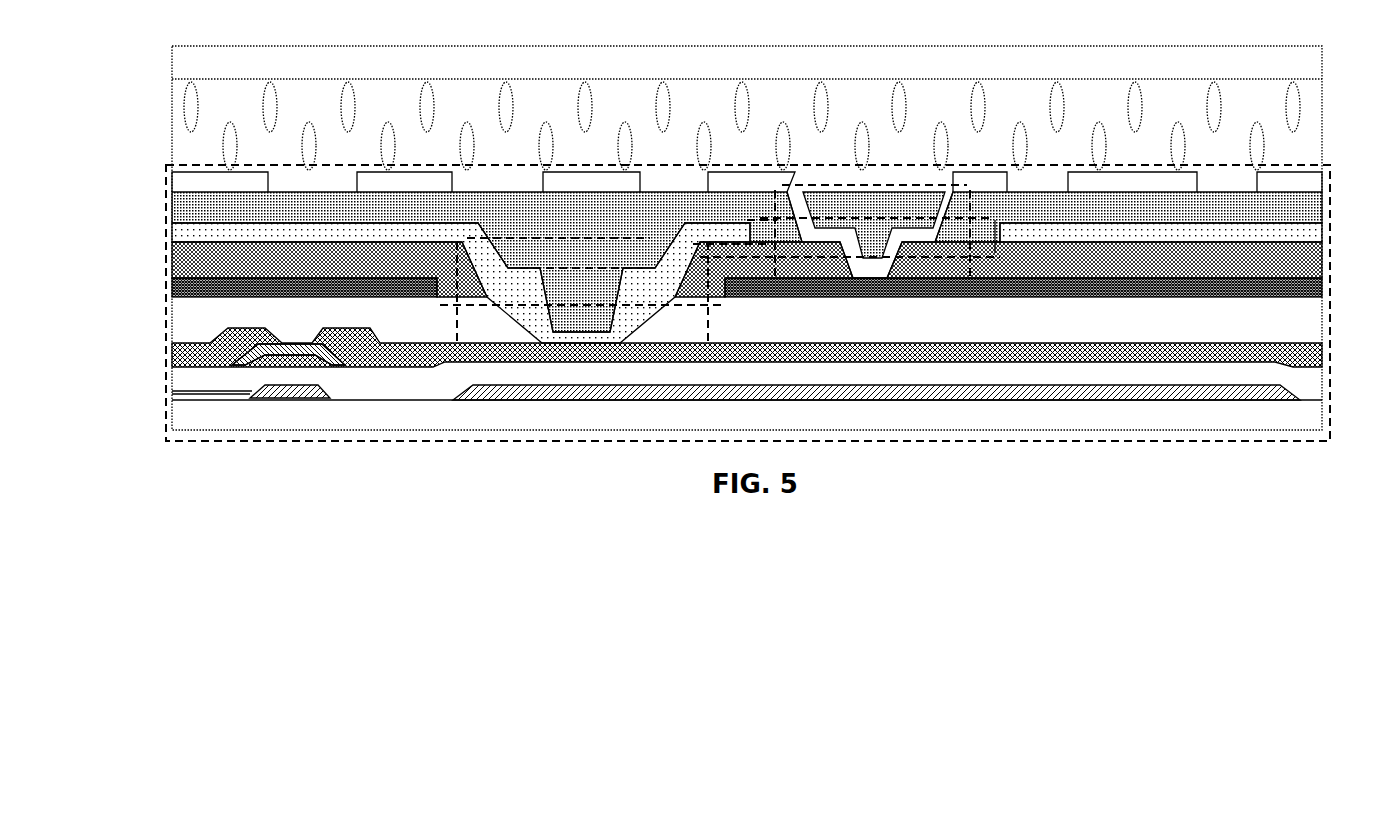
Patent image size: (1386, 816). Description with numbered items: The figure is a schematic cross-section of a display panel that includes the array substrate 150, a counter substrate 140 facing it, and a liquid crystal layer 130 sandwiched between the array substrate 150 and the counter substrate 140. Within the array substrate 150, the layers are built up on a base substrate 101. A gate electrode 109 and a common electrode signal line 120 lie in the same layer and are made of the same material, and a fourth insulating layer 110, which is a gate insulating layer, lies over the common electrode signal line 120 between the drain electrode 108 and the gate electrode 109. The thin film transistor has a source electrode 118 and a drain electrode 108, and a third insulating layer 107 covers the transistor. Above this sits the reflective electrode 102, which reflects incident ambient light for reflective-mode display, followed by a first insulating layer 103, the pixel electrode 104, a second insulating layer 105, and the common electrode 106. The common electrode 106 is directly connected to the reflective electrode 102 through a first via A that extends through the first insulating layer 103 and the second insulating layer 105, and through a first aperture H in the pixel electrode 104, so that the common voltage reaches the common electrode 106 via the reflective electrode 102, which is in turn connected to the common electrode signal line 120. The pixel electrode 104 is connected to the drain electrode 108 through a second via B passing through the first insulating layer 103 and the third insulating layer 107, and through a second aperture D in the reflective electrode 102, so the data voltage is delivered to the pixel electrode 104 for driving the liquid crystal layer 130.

The base substrate 101 is at (1322, 413).
The reflective electrode 102 is at (1322, 283).
The first insulating layer 103 is at (1322, 257).
The pixel electrode 104 is at (1322, 235).
The second insulating layer 105 is at (1322, 213).
The common electrode 106 is at (1322, 188).
The third insulating layer 107 is at (1322, 325).
The drain electrode 108 is at (1322, 352).
The gate electrode 109 is at (250, 392).
The fourth insulating layer 110 is at (1322, 375).
The source electrode 118 is at (200, 350).
The common electrode signal line 120 is at (1322, 393).
The liquid crystal layer 130 is at (1322, 132).
The counter substrate 140 is at (1322, 65).
The array substrate 150 is at (166, 197).
The first via A is at (873, 185).
The second via B is at (651, 240).
The second aperture D is at (507, 268).
The first aperture H is at (995, 220).